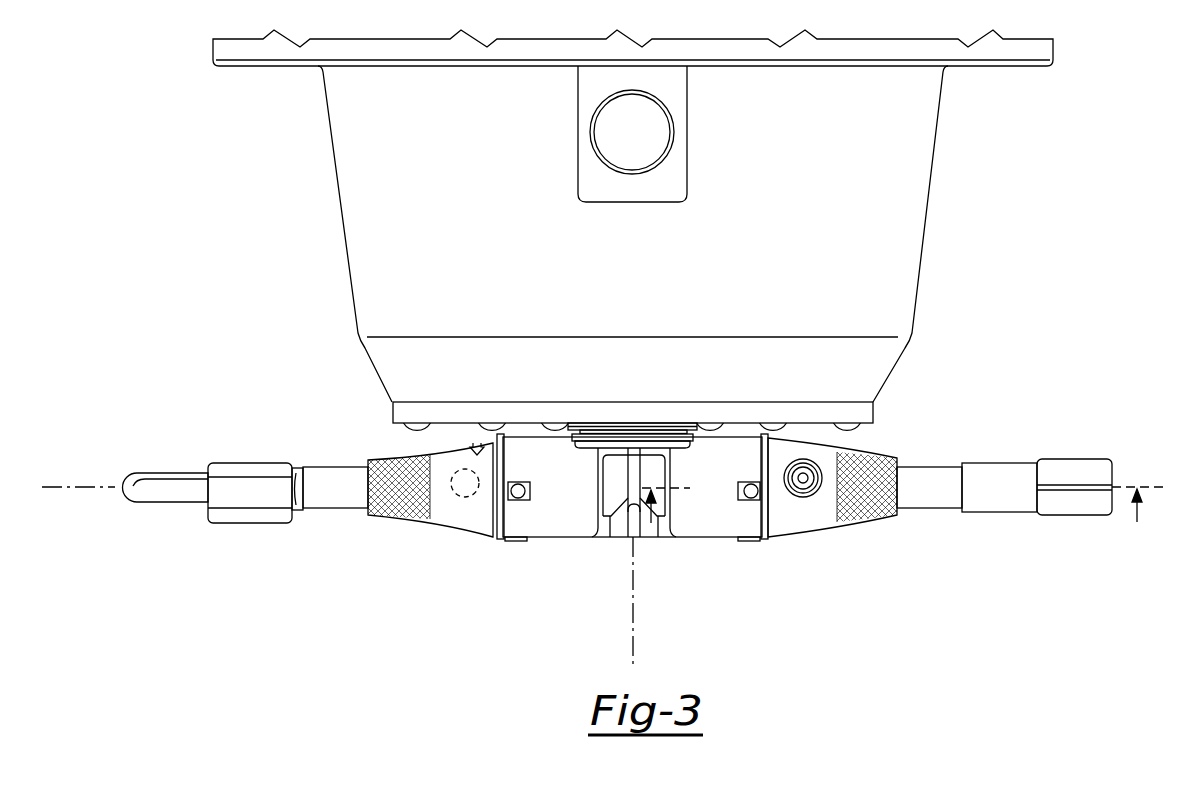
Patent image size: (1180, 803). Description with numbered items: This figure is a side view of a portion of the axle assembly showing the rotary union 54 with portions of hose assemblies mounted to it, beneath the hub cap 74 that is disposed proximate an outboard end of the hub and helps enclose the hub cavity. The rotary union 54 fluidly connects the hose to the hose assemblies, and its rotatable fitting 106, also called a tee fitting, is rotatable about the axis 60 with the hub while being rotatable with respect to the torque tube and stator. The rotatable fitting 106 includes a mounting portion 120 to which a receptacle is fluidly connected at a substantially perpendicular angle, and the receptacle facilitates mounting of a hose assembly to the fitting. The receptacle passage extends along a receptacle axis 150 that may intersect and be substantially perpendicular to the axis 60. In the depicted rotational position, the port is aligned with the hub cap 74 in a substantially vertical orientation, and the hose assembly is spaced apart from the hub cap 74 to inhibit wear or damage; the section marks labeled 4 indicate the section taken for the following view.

The hub cap 74 is at (622, 274).
The mounting portion 120 is at (631, 430).
The rotary union 54 is at (613, 539).
The rotatable fitting 106 is at (640, 539).
The receptacle axis 150 is at (98, 487).
The axis 60 is at (633, 645).
The section line 4- 4 is at (900, 491).